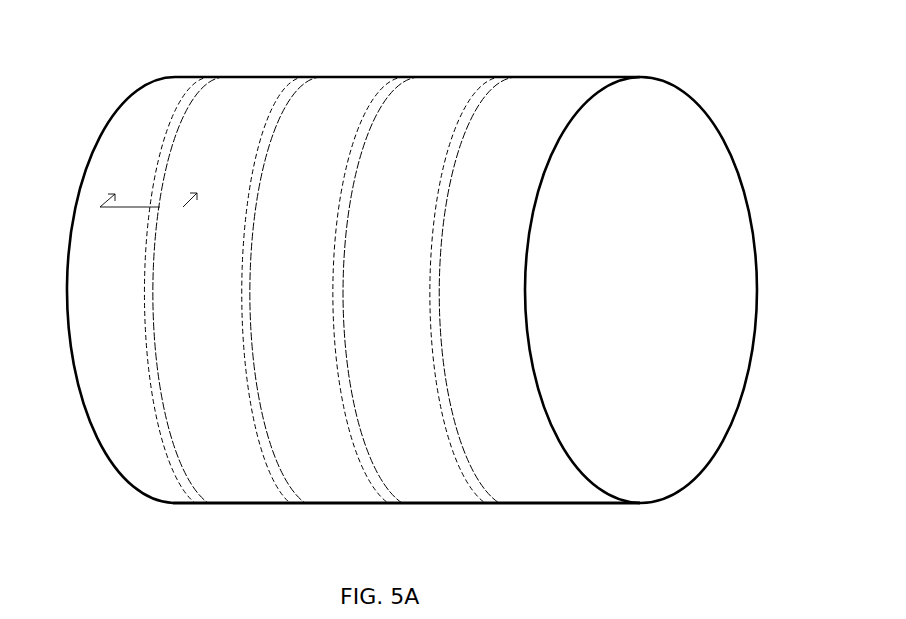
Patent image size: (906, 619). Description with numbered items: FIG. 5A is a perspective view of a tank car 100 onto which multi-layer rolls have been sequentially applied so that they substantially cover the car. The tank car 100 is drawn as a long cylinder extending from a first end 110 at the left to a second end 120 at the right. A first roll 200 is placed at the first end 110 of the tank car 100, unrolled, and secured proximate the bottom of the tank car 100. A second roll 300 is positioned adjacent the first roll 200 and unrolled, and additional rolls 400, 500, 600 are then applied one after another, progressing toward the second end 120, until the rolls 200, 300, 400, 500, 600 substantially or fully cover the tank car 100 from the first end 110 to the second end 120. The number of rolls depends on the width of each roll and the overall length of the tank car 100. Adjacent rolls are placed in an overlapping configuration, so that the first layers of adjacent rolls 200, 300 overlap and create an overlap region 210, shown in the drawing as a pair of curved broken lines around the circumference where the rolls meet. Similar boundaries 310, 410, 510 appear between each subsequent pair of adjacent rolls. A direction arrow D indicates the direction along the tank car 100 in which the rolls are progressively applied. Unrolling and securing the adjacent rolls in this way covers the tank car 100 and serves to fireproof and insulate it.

The tank car 100 is at (439, 279).
The first end 110 is at (128, 98).
The second end 120 is at (653, 83).
The first roll 200 is at (188, 297).
The overlap region 210 is at (188, 478).
The second roll 300 is at (288, 291).
The second boundary 310 is at (285, 478).
The additional roll 400 is at (382, 290).
The third boundary 410 is at (377, 480).
The additional roll 500 is at (479, 290).
The fourth boundary 510 is at (472, 480).
The additional roll 600 is at (538, 95).
The direction D is at (152, 195).